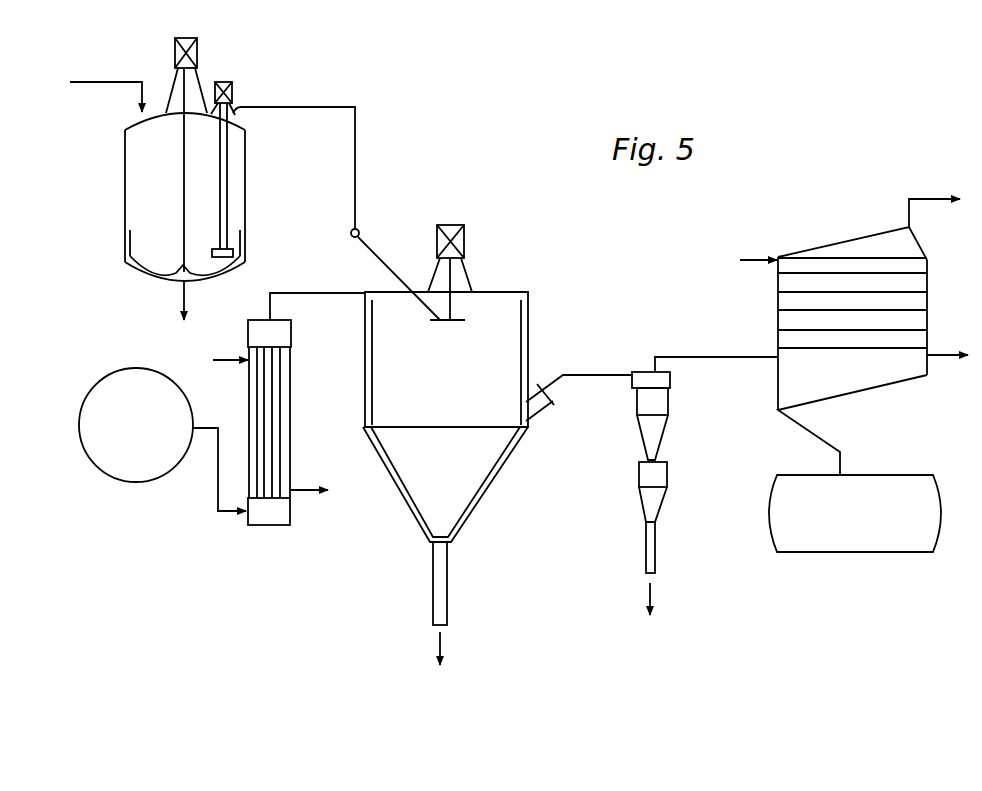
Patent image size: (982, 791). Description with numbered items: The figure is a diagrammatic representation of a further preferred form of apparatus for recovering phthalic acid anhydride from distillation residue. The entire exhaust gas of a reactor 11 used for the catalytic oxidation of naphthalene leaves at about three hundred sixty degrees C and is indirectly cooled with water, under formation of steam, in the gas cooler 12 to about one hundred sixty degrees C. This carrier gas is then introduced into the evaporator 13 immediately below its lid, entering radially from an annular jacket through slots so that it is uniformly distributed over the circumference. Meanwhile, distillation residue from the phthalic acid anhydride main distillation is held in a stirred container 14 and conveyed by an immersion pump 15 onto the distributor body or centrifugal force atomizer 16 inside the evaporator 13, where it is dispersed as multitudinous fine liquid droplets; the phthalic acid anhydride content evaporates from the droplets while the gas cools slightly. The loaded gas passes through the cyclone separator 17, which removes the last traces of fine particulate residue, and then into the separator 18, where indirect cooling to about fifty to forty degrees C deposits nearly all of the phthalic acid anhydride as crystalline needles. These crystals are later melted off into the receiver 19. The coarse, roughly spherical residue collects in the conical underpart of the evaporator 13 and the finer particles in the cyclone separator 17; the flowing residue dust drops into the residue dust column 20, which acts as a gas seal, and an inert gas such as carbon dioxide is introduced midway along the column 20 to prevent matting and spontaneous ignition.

The reactor 11 is at (162, 439).
The gas cooler 12 is at (278, 425).
The evaporator 13 is at (497, 417).
The container 14 is at (255, 179).
The immersion pump 15 is at (212, 250).
The distributor body or centrifugal force atomizer 16 is at (457, 321).
The cyclone separator 17 is at (660, 405).
The separator 18 is at (854, 337).
The receiver 19 is at (855, 513).
The residue dust column 20 is at (443, 590).